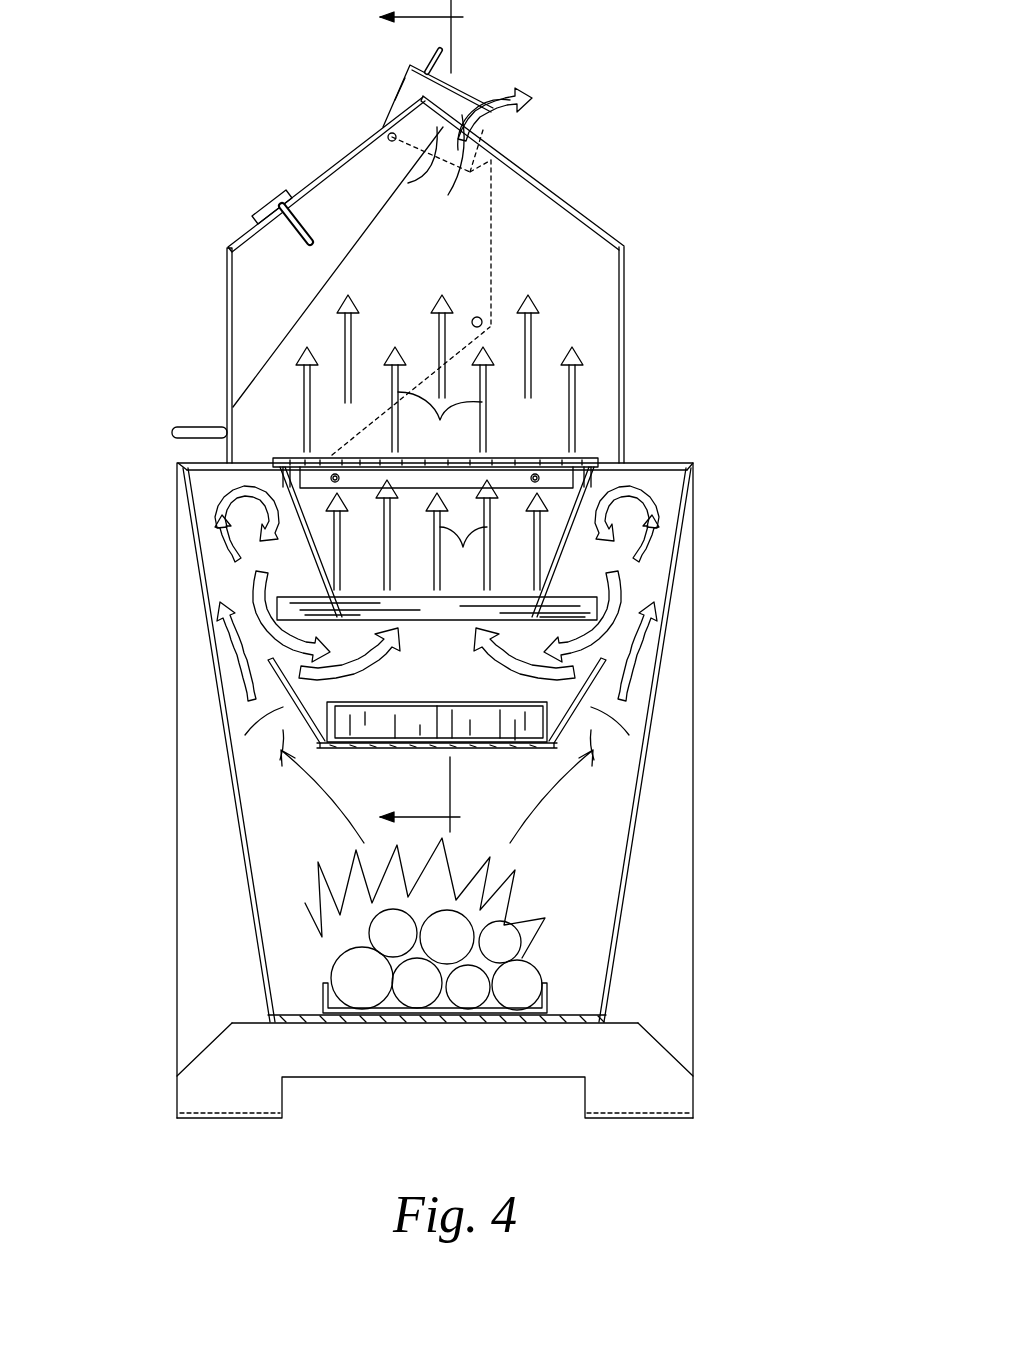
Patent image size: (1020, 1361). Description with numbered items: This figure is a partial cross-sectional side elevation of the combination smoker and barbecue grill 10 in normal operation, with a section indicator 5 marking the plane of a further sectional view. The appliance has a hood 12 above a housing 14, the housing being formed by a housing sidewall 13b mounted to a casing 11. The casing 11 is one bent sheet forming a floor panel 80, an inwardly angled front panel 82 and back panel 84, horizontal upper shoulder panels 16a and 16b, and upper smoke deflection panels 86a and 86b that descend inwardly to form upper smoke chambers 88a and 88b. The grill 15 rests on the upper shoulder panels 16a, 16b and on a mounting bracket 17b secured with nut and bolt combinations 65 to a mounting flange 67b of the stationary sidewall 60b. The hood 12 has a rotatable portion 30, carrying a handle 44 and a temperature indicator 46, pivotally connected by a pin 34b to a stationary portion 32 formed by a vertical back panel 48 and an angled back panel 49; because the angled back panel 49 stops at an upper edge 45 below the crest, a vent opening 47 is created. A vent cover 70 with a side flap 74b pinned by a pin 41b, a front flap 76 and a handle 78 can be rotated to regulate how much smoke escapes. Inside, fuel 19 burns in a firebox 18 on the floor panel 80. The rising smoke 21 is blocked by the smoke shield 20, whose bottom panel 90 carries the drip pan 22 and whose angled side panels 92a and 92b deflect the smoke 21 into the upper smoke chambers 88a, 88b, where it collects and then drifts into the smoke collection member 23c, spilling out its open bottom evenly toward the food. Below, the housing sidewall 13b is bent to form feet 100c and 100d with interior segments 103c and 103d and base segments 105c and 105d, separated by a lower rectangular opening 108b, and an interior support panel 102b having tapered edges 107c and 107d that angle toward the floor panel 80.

The section line 5- 5 is at (406, 416).
The combination smoker and barbecue grill 10 is at (720, 250).
The casing 11 is at (248, 938).
The hood 12 is at (205, 255).
The housing sidewall 13b is at (283, 860).
The housing 14 is at (172, 718).
The grill 15 is at (510, 458).
The upper shoulder panel 16a is at (195, 462).
The upper shoulder panel 16b is at (665, 462).
The mounting bracket 17b is at (588, 470).
The firebox 18 is at (548, 992).
The fuel 19 is at (425, 924).
The smoke shield 20 is at (463, 755).
The smoke 21 is at (702, 630).
The drip pan 22 is at (490, 750).
The smoke collection member 23c is at (448, 620).
The rotatable portion 30 is at (335, 163).
The stationary portion 32 is at (630, 240).
The pin 34b is at (472, 314).
The pin 41b is at (388, 130).
The handle 44 is at (205, 425).
The upper edge 45 is at (478, 100).
The temperature indicator 46 is at (272, 205).
The vent opening 47 is at (463, 103).
The vertical back panel 48 is at (632, 336).
The angled back panel 49 is at (560, 185).
The stationary sidewall 60b is at (565, 320).
The nut and bolt combinations 65 is at (332, 458).
The mounting flange 67b is at (288, 470).
The vent cover 70 is at (398, 78).
The side flap 74b is at (441, 221).
The front flap 76 is at (398, 83).
The handle 78 is at (435, 62).
The floor panel 80 is at (500, 1023).
The front panel 82 is at (235, 800).
The back panel 84 is at (628, 845).
The upper smoke deflection panel 86a is at (262, 575).
The upper smoke deflection panel 86b is at (605, 560).
The upper smoke chamber 88a is at (250, 500).
The upper smoke chamber 88b is at (640, 520).
The bottom panel 90 is at (380, 752).
The angled side panel 92a is at (290, 712).
The angled side panel 92b is at (580, 712).
The foot 100c is at (640, 1128).
The foot 100d is at (225, 1128).
The interior support panel 102b is at (435, 1039).
The interior segment 103c is at (630, 1095).
The interior segment 103d is at (235, 1095).
The base segment 105c is at (660, 1122).
The base segment 105d is at (195, 1122).
The tapered edge 107c is at (665, 1048).
The tapered edge 107d is at (200, 1050).
The lower rectangular opening 108b is at (345, 1095).